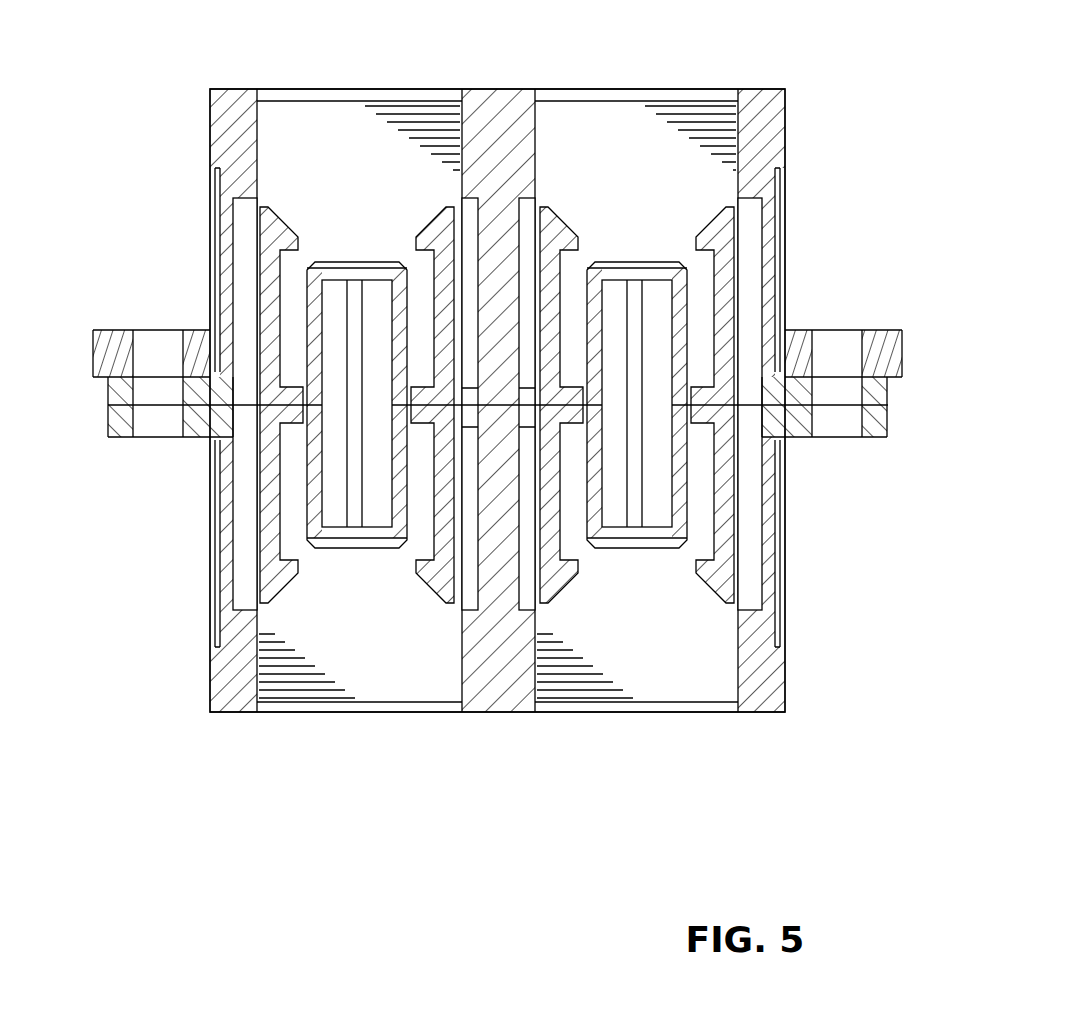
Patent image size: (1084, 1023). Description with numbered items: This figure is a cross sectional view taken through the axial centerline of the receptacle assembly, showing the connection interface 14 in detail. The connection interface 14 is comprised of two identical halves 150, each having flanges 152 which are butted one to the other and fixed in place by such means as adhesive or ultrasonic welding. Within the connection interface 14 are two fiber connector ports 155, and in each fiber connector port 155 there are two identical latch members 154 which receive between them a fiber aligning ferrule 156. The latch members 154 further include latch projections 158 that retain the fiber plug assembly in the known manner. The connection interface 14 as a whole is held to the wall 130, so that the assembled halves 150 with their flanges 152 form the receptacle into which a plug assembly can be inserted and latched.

The connection interface 14 is at (206, 137).
The wall 130 is at (120, 329).
The identical halves 150 is at (790, 115).
The flanges 152 is at (887, 383).
The latch members 154 is at (615, 572).
The fiber connector port 155 is at (282, 115).
The fiber aligning ferrule 156 is at (332, 298).
The latch projections 158 is at (294, 578).